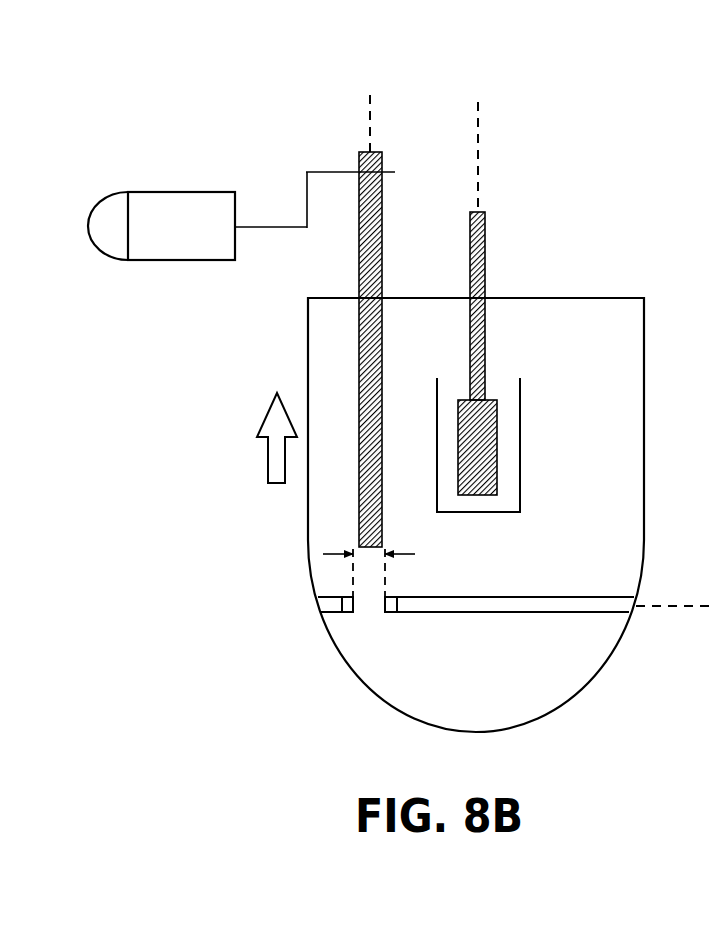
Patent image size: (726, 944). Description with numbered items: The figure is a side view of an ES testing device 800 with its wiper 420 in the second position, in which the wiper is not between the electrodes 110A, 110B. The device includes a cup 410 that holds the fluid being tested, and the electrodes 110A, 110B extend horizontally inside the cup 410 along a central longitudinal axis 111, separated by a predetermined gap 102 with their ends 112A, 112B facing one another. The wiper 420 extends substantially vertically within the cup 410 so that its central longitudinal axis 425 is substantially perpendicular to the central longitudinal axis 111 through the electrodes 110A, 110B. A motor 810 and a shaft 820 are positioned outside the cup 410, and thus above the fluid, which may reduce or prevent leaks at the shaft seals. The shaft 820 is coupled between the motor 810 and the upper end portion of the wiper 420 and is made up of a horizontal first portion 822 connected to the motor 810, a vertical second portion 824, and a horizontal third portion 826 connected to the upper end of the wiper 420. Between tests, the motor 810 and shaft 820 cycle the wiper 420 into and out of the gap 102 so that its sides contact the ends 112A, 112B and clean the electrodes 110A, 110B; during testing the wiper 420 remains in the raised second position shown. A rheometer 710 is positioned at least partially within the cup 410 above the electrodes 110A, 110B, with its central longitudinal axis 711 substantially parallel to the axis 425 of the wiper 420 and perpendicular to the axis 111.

The ES testing device 800 is at (151, 106).
The motor 810 is at (199, 233).
The shaft 820 is at (277, 177).
The first portion 822 is at (273, 228).
The second portion 824 is at (307, 217).
The third portion 826 is at (327, 172).
The central longitudinal axis 425 is at (372, 113).
The wiper 420 is at (383, 368).
The central longitudinal axis 711 is at (480, 122).
The rheometer 710 is at (505, 262).
The predetermined gap 102 is at (406, 556).
The cup 410 is at (308, 547).
The electrode 110A is at (337, 613).
The end 112A is at (353, 612).
The electrode 110B is at (433, 615).
The end 112B is at (386, 596).
The central longitudinal axis 111 is at (668, 607).